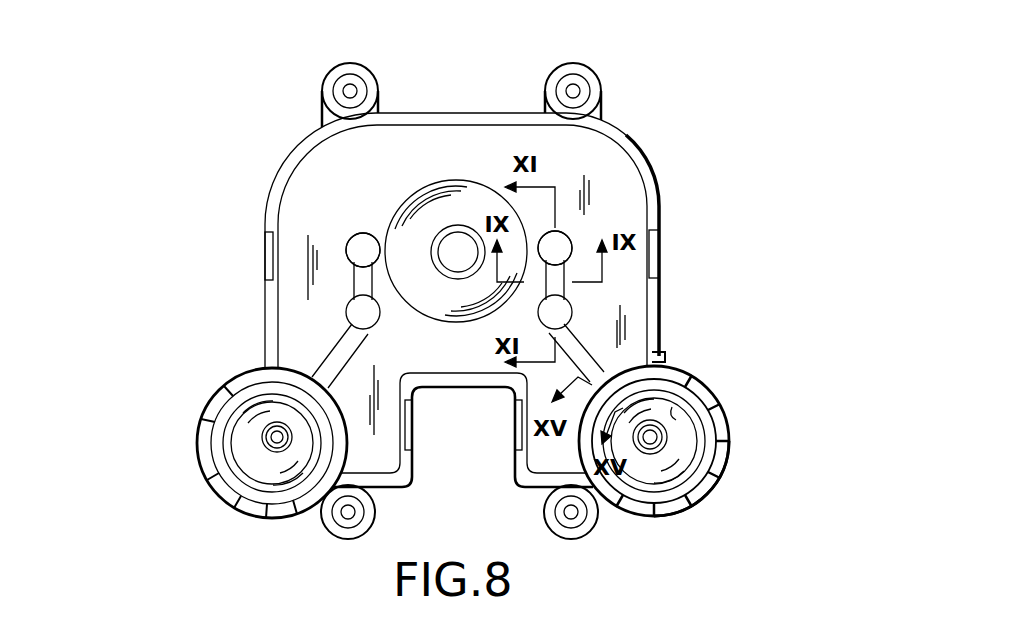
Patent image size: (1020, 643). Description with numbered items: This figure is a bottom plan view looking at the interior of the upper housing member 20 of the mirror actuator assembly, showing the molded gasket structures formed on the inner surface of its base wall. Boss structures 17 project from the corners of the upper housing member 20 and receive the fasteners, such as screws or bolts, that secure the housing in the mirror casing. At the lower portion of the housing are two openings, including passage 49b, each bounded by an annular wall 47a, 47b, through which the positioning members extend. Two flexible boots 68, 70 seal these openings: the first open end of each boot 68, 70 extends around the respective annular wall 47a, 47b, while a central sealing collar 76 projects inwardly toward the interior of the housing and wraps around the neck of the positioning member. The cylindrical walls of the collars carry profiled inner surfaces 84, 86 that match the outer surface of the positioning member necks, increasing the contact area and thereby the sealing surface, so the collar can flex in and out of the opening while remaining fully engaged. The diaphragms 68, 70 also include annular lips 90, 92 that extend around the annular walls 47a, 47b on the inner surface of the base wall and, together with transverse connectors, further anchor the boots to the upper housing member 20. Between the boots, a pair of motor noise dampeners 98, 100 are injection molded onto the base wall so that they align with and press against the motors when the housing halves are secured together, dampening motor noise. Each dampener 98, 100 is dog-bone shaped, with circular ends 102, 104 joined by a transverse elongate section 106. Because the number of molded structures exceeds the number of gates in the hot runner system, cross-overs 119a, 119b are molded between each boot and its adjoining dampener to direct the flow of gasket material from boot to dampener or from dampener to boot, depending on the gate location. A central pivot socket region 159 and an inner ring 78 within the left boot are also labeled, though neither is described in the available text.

The boss structures 17 is at (378, 83).
The upper housing member 20 is at (645, 132).
The annular wall 47a is at (700, 420).
The annular wall 47b is at (270, 492).
The passage 49b is at (672, 407).
The boot 68 is at (680, 440).
The boot 70 is at (258, 460).
The central sealing collar 76 is at (655, 455).
The piston ring 78 is at (265, 415).
The profiled inner surface 84 is at (705, 490).
The profiled inner surface 86 is at (262, 442).
The annular lip 90 is at (222, 412).
The annular lip 92 is at (682, 385).
The motor noise dampener 98 is at (353, 240).
The motor noise dampener 100 is at (565, 237).
The circular end 102 is at (368, 236).
The circular end 104 is at (373, 328).
The transverse elongate section 106 is at (357, 282).
The cross-over 119a is at (318, 372).
The cross-over 119b is at (603, 352).
The central hub 159 is at (462, 225).